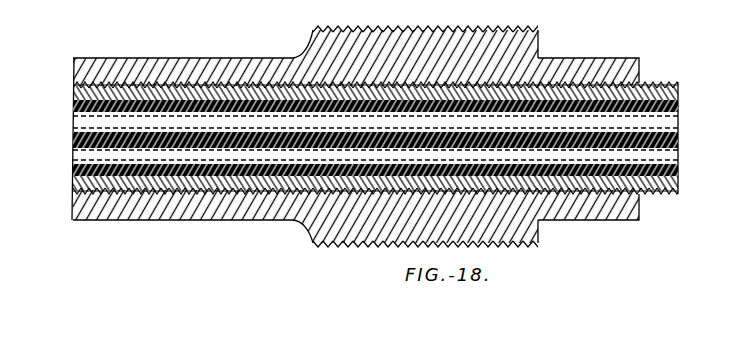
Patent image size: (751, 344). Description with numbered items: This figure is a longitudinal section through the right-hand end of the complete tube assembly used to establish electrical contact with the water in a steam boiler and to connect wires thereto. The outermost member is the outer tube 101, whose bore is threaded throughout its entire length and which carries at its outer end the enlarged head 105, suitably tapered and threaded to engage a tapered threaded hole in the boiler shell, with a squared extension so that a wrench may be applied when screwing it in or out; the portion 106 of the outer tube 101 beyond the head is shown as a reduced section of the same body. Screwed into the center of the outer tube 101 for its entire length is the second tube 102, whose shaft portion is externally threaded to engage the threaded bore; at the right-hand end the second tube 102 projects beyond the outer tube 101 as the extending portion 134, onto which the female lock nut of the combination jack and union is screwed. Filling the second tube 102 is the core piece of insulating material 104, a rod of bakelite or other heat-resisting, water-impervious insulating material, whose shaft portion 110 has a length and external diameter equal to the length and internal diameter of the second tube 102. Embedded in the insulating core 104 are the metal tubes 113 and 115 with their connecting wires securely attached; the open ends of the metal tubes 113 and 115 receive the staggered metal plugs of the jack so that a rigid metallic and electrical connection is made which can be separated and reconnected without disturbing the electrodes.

The outer tube 101 is at (153, 57).
The second tube 102 is at (78, 94).
The core piece of insulating material 104 is at (678, 108).
The enlarged head 105 is at (402, 30).
The reduced end portion of body 106 is at (575, 57).
The shaft portion 110 is at (272, 49).
The metal tube 113 is at (375, 124).
The metal tube 115 is at (375, 156).
The extending portion 134 is at (655, 83).